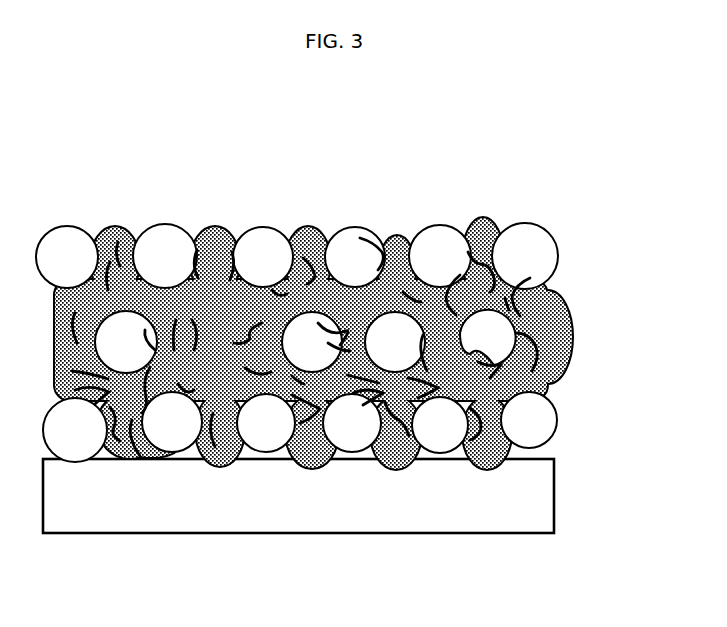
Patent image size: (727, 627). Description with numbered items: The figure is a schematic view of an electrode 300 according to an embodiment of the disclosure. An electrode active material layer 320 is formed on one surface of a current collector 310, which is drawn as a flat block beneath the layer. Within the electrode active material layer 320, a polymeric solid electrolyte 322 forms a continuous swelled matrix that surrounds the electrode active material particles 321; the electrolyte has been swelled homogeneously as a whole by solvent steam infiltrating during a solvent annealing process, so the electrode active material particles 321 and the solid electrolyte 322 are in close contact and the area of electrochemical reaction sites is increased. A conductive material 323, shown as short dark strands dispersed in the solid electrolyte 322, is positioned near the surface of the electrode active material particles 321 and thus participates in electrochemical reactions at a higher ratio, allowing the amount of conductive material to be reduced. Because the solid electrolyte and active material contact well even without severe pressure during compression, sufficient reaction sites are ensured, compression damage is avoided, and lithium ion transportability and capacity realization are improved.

The electrode 300 is at (141, 114).
The current collector 310 is at (556, 494).
The electrode active material layer 320 is at (568, 220).
The electrode active material particles 321 is at (65, 222).
The polymeric solid electrolyte 322 is at (208, 231).
The conductive material 323 is at (381, 248).